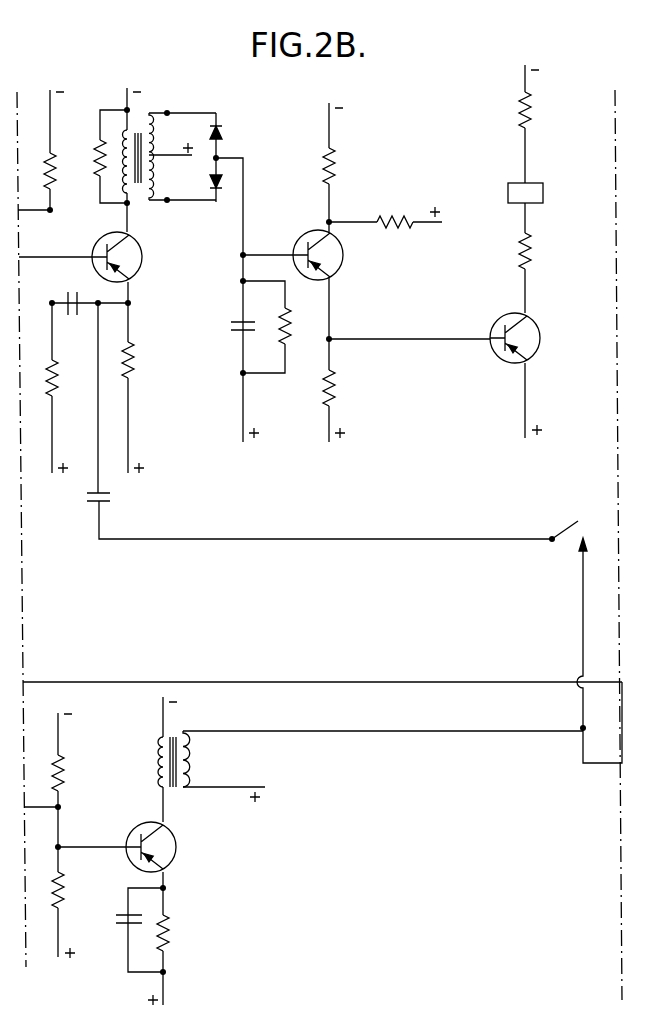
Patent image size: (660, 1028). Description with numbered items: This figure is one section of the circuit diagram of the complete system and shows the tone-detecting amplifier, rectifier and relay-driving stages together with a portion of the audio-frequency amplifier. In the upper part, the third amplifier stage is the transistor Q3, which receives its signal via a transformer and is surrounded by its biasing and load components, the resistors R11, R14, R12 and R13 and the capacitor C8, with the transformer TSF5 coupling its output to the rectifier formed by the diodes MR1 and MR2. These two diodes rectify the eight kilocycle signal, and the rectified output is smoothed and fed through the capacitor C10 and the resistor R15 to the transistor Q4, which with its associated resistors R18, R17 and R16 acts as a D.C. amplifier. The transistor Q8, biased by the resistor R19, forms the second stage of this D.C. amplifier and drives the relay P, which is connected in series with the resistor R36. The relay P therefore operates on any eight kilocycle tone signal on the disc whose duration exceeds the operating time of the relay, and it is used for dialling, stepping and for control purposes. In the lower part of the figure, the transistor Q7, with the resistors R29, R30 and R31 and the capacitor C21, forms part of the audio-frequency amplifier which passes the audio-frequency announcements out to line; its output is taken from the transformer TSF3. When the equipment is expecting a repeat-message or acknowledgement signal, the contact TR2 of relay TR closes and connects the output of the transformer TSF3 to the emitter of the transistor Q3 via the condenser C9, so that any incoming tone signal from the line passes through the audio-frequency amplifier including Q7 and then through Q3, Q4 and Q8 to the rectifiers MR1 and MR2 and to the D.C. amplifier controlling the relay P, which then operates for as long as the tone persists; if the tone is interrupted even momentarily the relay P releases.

The resistor R11 is at (48, 186).
The resistor R14 is at (96, 174).
The transformer TSF5 is at (137, 130).
The diode MR1 is at (222, 136).
The diode MR2 is at (224, 184).
The third amplifier stage Q3 is at (141, 258).
The capacitor C8 is at (66, 300).
The resistor R12 is at (57, 388).
The resistor R13 is at (133, 344).
The condenser C9 is at (110, 492).
The capacitor C10 is at (232, 336).
The resistor R15 is at (293, 332).
The resistor R18 is at (334, 171).
The resistor R17 is at (413, 206).
The transistor Q4 is at (339, 270).
The resistor R16 is at (340, 390).
The resistor R36 is at (531, 127).
The relay P is at (543, 194).
The resistor R19 is at (533, 265).
The transistor Q8 is at (540, 340).
The contact TR2 is at (583, 529).
The transformer TSF3 is at (175, 733).
The resistor R29 is at (82, 757).
The transistor Q7 is at (174, 854).
The resistor R30 is at (84, 893).
The capacitor C21 is at (140, 912).
The resistor R31 is at (180, 919).